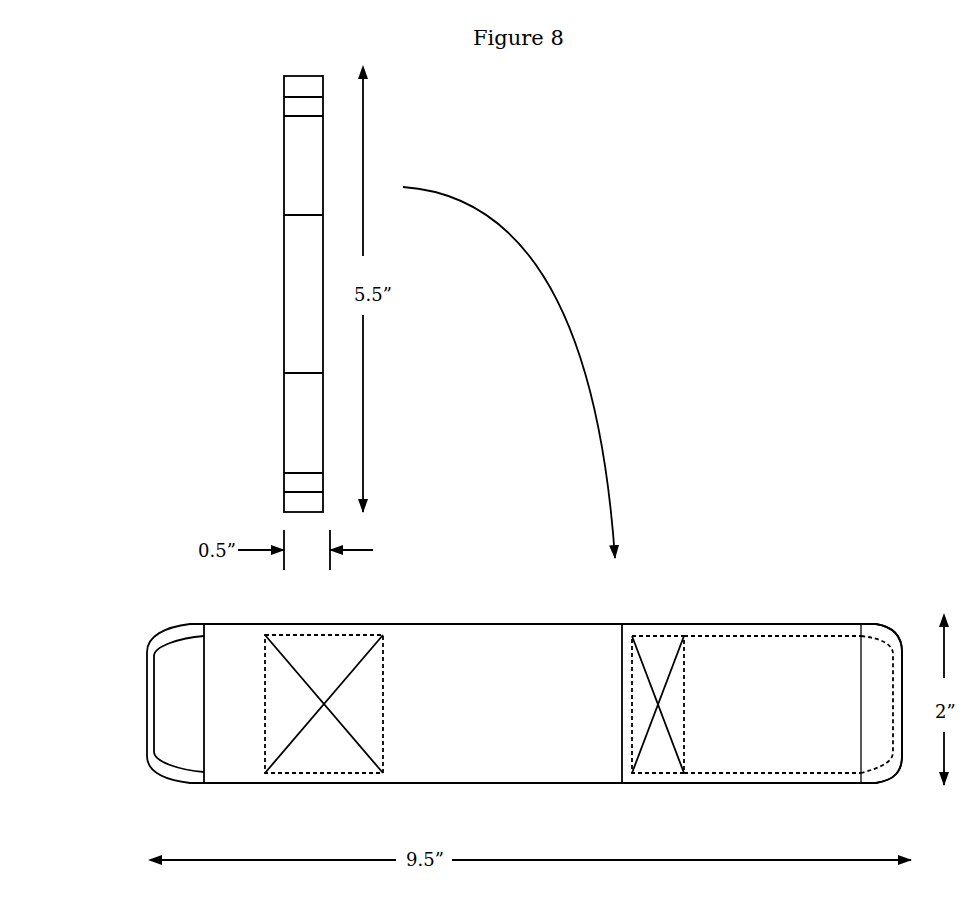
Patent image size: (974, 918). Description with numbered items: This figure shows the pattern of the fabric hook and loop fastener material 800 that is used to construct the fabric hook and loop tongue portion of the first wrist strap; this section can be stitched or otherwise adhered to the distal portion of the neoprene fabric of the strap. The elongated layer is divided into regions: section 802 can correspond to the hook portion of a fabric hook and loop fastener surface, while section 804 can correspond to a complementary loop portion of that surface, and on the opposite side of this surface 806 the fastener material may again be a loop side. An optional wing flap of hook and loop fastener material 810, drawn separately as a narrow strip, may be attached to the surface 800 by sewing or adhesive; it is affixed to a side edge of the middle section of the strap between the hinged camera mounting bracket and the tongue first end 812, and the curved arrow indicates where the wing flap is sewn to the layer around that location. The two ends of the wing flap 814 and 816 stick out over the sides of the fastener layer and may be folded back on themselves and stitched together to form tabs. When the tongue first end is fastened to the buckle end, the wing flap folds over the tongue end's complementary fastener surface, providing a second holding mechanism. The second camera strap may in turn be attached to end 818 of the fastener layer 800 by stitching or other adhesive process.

The fabric hook and loop fastener material 800 is at (120, 702).
The hook section 802 is at (903, 612).
The loop section 804 is at (150, 615).
The opposite side of the surface 806 is at (275, 792).
The wing flap 810 is at (275, 343).
The tongue first end 812 is at (622, 507).
The wing flap end 814 is at (268, 76).
The wing flap end 816 is at (268, 472).
The end of the fabric hook and loop fastener layer 818 is at (913, 637).